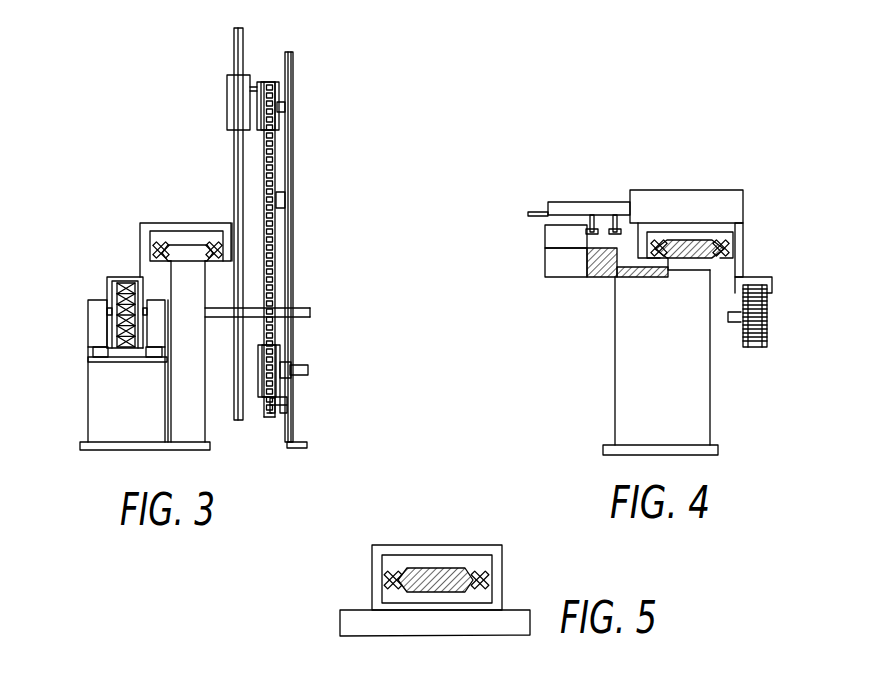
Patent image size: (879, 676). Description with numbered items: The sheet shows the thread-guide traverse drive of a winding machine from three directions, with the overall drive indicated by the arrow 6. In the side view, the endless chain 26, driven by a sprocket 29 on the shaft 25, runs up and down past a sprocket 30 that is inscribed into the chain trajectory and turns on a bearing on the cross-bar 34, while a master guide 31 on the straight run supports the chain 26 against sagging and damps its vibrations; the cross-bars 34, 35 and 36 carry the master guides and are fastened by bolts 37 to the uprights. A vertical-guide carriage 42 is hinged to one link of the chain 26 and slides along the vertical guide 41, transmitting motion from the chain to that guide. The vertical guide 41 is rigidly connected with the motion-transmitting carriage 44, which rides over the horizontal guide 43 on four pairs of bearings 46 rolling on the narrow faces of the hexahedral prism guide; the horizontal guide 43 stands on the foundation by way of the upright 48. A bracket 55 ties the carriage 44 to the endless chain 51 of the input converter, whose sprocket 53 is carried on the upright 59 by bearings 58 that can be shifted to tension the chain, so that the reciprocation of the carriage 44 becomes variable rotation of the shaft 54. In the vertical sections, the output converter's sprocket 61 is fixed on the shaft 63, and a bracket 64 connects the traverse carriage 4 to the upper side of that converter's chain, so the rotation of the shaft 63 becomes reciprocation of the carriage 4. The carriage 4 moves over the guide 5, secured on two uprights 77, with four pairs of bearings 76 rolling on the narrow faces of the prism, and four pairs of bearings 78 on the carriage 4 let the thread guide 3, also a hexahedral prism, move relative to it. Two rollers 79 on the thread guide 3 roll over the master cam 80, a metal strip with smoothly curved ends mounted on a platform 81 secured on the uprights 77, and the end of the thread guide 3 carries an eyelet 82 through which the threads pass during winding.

In FIG. 4, the thread guide 3 is at (567, 202).
In FIG. 5, the thread guide 3 is at (447, 567).
In FIG. 4, the carriage 4 is at (730, 205).
In FIG. 5, the carriage 4 is at (380, 580).
In FIG. 4, the guide 5 is at (687, 241).
In FIG. 3, the drive mechanism 6 is at (122, 114).
In FIG. 3, the shaft 25 is at (305, 365).
In FIG. 3, the chain 26 is at (276, 252).
In FIG. 3, the sprocket 29 is at (284, 386).
In FIG. 3, the sprocket 30 is at (258, 81).
In FIG. 3, the master guide 31 is at (268, 417).
In FIG. 3, the cross-bar 34 is at (293, 90).
In FIG. 3, the cross-bar 35 is at (290, 197).
In FIG. 3, the cross-bar 36 is at (290, 405).
In FIG. 3, the bolts 37 is at (293, 146).
In FIG. 3, the vertical guide 41 is at (233, 40).
In FIG. 3, the vertical-guide carriage 42 is at (227, 98).
In FIG. 3, the horizontal guide 43 is at (199, 243).
In FIG. 3, the motion-transmitting carriage 44 is at (163, 223).
In FIG. 3, the bearings 46 is at (207, 268).
In FIG. 3, the upright 48 is at (198, 423).
In FIG. 3, the endless chain 51 is at (113, 328).
In FIG. 3, the sprocket 53 is at (107, 297).
In FIG. 3, the shaft 54 is at (303, 307).
In FIG. 3, the bracket 55 is at (123, 277).
In FIG. 3, the bearings 58 is at (150, 361).
In FIG. 3, the upright 59 is at (95, 413).
In FIG. 4, the sprocket 61 is at (768, 307).
In FIG. 4, the shaft 63 is at (733, 317).
In FIG. 4, the bracket 64 is at (738, 280).
In FIG. 4, the bearings 76 is at (733, 256).
In FIG. 4, the uprights 77 is at (709, 403).
In FIG. 5, the bearings 78 is at (490, 592).
In FIG. 4, the rollers 79 is at (597, 271).
In FIG. 4, the master cam 80 is at (553, 237).
In FIG. 4, the platform 81 is at (555, 262).
In FIG. 4, the eyelet 82 is at (535, 211).